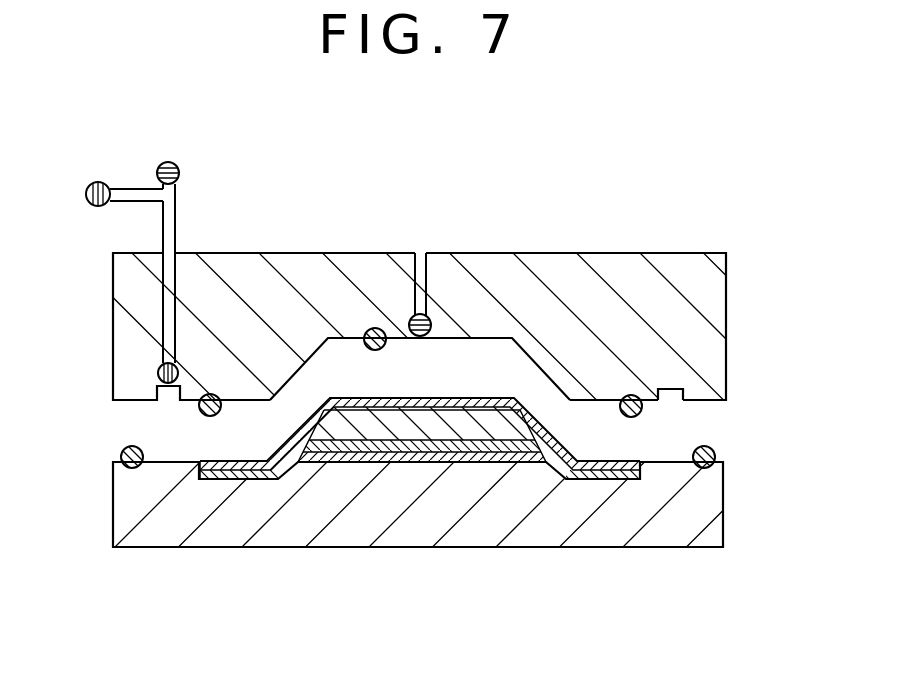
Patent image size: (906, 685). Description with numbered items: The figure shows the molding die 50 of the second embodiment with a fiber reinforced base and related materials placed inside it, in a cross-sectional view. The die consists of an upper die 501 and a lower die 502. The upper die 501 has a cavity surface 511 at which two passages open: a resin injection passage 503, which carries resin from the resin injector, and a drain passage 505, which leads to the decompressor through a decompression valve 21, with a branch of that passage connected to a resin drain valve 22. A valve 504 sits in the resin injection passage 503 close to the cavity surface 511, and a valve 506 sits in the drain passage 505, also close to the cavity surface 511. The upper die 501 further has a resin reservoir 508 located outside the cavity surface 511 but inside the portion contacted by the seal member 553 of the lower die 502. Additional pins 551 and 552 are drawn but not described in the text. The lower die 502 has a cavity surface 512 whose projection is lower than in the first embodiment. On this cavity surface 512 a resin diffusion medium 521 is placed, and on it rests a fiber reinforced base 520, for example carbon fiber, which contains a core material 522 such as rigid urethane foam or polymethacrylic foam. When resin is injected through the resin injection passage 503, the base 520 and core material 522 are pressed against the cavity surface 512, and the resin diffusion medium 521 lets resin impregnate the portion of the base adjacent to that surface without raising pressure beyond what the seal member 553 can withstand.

The decompression valve 21 is at (168, 162).
The resin drain valve 22 is at (88, 183).
The molding die 50 is at (681, 192).
The upper die 501 is at (607, 270).
The lower die 502 is at (400, 537).
The resin injection passage 503 is at (420, 249).
The valve 504 is at (432, 322).
The drain passage 505 is at (174, 286).
The valve 506 is at (157, 372).
The resin reservoir 508 is at (664, 395).
The cavity surface 511 is at (490, 336).
The cavity surface 512 is at (303, 463).
The fiber reinforced base 520 is at (215, 470).
The resin diffusion medium 521 is at (568, 480).
The core material 522 is at (467, 430).
The center positioning pin 551 is at (375, 335).
The upper positioning pins 552 is at (213, 395).
The seal member 553 is at (132, 468).